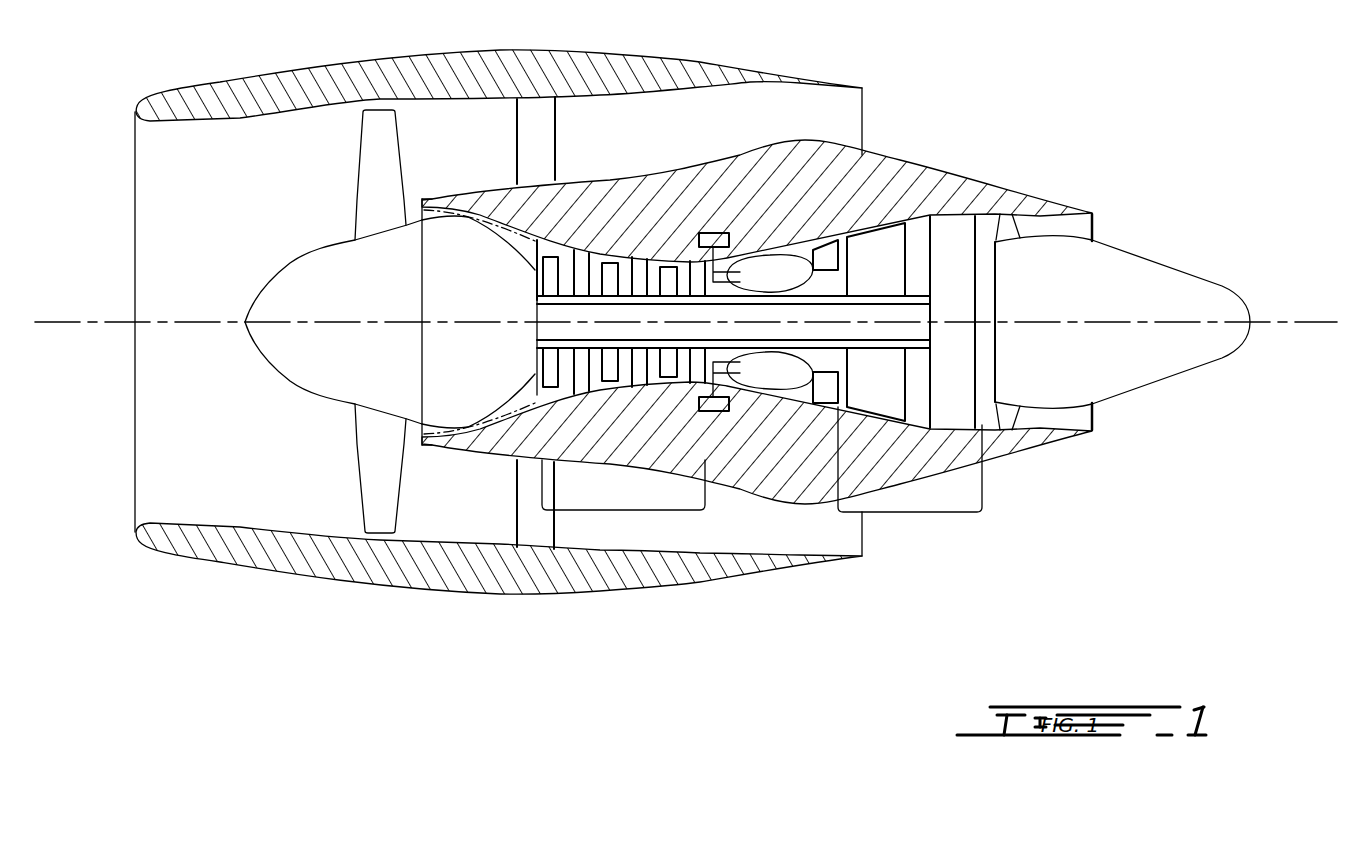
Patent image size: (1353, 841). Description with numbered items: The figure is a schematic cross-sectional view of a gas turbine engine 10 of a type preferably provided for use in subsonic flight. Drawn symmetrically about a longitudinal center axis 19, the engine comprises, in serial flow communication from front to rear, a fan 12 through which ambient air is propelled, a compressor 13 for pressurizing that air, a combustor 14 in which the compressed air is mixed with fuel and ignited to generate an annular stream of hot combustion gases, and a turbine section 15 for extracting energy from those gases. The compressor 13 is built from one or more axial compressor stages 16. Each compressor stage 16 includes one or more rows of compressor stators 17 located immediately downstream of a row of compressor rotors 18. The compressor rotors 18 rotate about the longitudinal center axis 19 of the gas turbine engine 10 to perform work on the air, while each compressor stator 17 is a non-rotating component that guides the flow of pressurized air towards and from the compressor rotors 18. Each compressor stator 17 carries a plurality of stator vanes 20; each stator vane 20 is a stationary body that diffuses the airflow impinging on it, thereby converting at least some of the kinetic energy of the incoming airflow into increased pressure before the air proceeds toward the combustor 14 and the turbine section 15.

The gas turbine engine 10 is at (1020, 110).
The fan 12 is at (375, 460).
The compressor 13 is at (617, 510).
The combustor 14 is at (760, 268).
The turbine section 15 is at (907, 512).
The axial compressor stage 16 is at (593, 247).
The compressor stator 17 is at (582, 380).
The compressor rotor 18 is at (609, 267).
The longitudinal center axis 19 is at (1307, 321).
The stator vane 20 is at (640, 363).